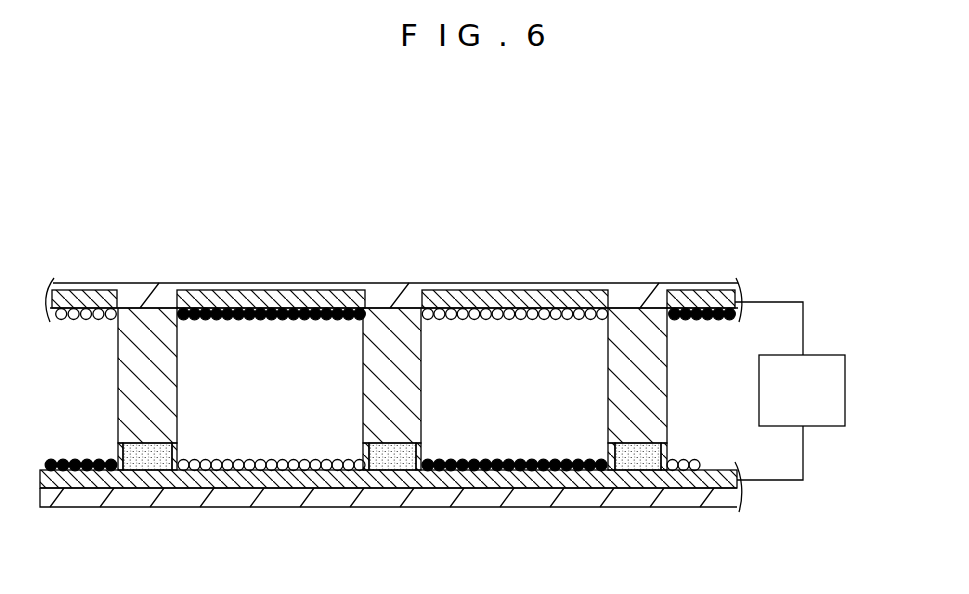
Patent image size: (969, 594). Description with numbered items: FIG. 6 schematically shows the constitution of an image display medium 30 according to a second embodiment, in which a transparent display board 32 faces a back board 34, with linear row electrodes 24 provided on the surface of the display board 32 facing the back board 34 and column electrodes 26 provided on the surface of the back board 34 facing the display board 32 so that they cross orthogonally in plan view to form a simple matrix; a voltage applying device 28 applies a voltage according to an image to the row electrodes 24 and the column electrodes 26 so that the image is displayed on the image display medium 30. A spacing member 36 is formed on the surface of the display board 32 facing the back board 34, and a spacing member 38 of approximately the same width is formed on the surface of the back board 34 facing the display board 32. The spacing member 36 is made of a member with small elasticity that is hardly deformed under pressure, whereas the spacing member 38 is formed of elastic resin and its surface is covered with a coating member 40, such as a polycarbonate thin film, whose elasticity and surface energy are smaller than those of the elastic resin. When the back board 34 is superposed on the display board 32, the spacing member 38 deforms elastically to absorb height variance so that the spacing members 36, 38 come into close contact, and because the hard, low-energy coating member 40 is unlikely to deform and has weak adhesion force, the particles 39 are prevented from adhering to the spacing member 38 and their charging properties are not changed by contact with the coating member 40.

The image display medium 30 is at (704, 198).
The display board 32 is at (382, 295).
The row electrodes 24 is at (525, 295).
The particles 39 is at (290, 318).
The coating member 40 is at (606, 458).
The spacing member 36 is at (657, 375).
The spacing member 38 is at (638, 470).
The column electrodes 26 is at (130, 478).
The back board 34 is at (75, 498).
The voltage applying device 28 is at (828, 362).